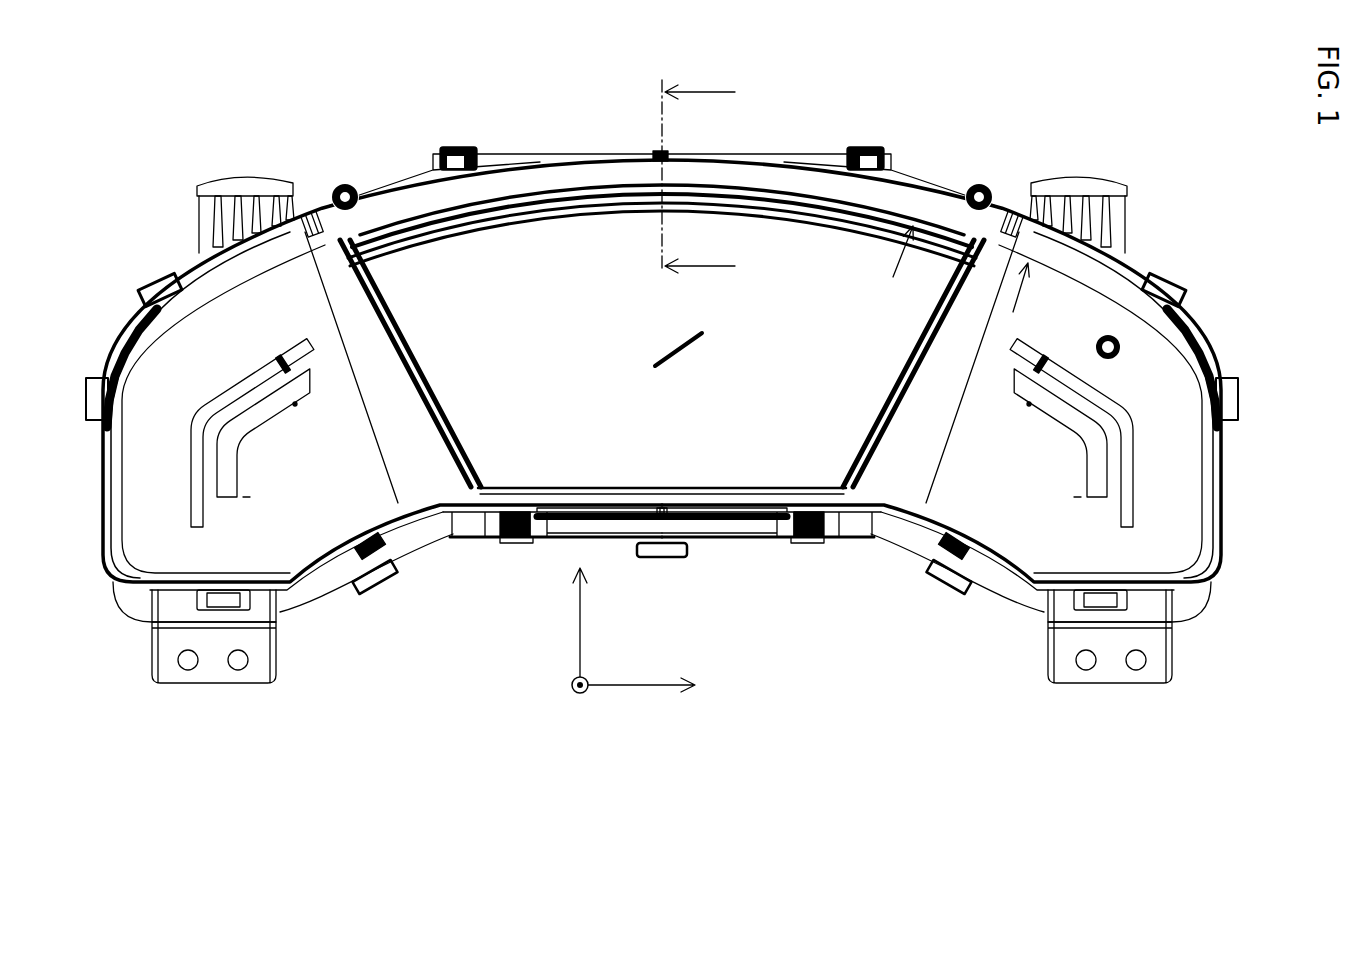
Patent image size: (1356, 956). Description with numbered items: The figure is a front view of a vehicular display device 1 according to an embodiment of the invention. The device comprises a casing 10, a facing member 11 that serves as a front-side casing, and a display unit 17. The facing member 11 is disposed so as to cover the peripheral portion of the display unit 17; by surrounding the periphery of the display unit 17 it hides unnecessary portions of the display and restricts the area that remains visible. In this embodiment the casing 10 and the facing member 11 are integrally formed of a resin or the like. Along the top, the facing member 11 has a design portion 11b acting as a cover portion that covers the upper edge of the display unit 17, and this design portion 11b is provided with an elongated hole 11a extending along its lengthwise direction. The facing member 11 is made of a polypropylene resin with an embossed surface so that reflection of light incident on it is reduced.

The vehicular display device 1 is at (952, 127).
The casing 10 is at (427, 158).
The facing member 11 is at (793, 177).
The elongated hole 11a is at (850, 210).
The design portion 11b is at (565, 200).
The display unit 17 is at (685, 450).